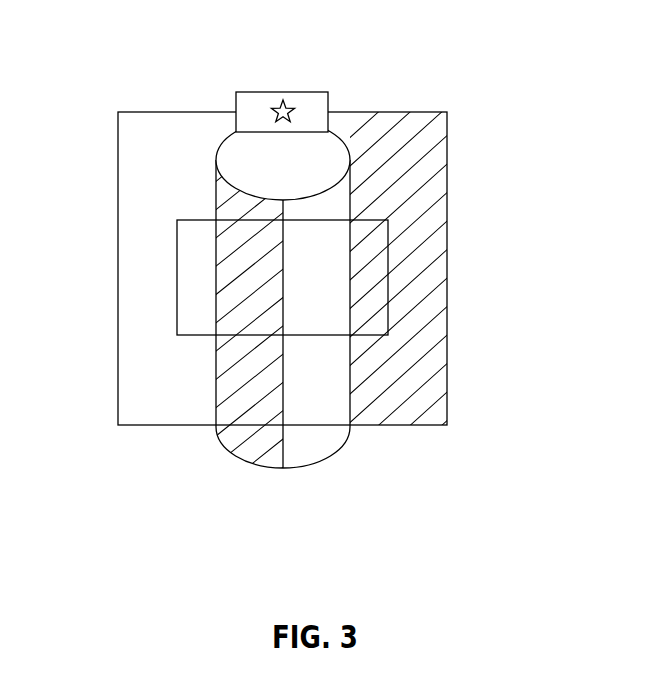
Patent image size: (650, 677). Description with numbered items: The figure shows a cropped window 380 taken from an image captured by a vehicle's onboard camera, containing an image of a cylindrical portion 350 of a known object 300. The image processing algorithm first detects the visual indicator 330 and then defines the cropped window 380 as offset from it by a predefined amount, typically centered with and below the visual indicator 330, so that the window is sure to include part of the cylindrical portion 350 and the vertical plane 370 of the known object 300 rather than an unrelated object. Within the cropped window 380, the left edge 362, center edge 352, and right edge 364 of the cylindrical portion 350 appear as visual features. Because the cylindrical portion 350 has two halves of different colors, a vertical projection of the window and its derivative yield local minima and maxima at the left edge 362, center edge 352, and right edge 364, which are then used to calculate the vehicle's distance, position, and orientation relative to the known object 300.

The known object 300 is at (205, 70).
The visual indicator 330 is at (283, 92).
The cylindrical portion 350 is at (287, 324).
The center edge 352 is at (283, 477).
The left edge 362 is at (216, 442).
The right edge 364 is at (350, 441).
The vertical plane 370 is at (448, 233).
The cropped window 380 is at (177, 278).